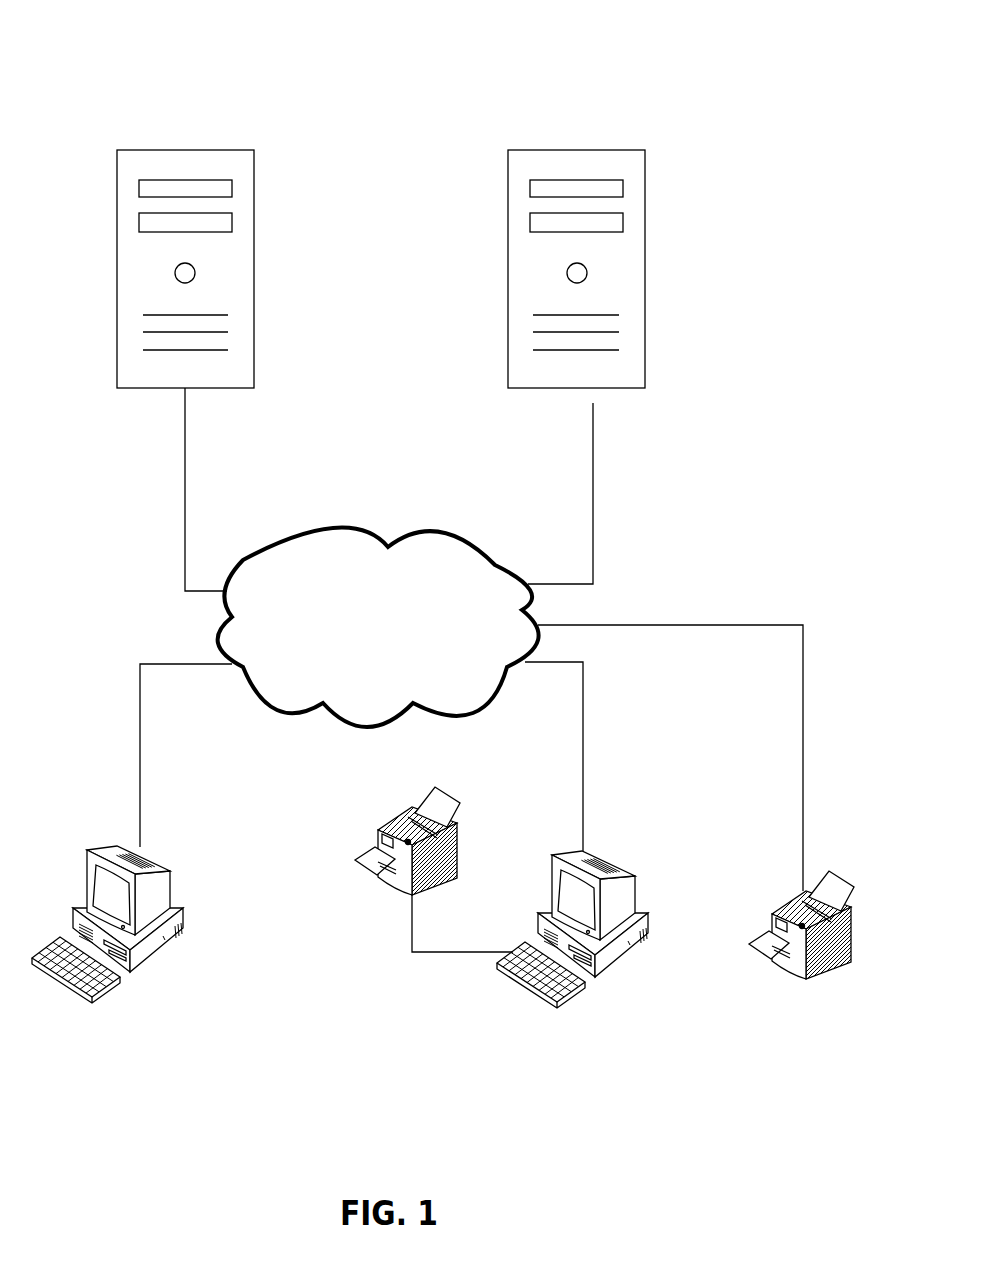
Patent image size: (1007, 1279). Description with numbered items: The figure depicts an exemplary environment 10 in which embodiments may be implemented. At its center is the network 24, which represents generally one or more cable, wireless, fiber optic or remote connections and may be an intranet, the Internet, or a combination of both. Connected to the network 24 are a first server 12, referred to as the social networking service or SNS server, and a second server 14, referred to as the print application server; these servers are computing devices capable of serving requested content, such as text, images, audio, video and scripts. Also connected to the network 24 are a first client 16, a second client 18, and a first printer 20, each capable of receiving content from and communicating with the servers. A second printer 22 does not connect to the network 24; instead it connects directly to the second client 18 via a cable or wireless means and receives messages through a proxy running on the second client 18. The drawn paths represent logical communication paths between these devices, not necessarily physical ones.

The environment 10 is at (264, 56).
The first server 12 is at (254, 217).
The second server 14 is at (645, 222).
The first client 16 is at (160, 958).
The second client 18 is at (632, 963).
The first printer 20 is at (808, 978).
The second printer 22 is at (395, 885).
The network 24 is at (335, 527).